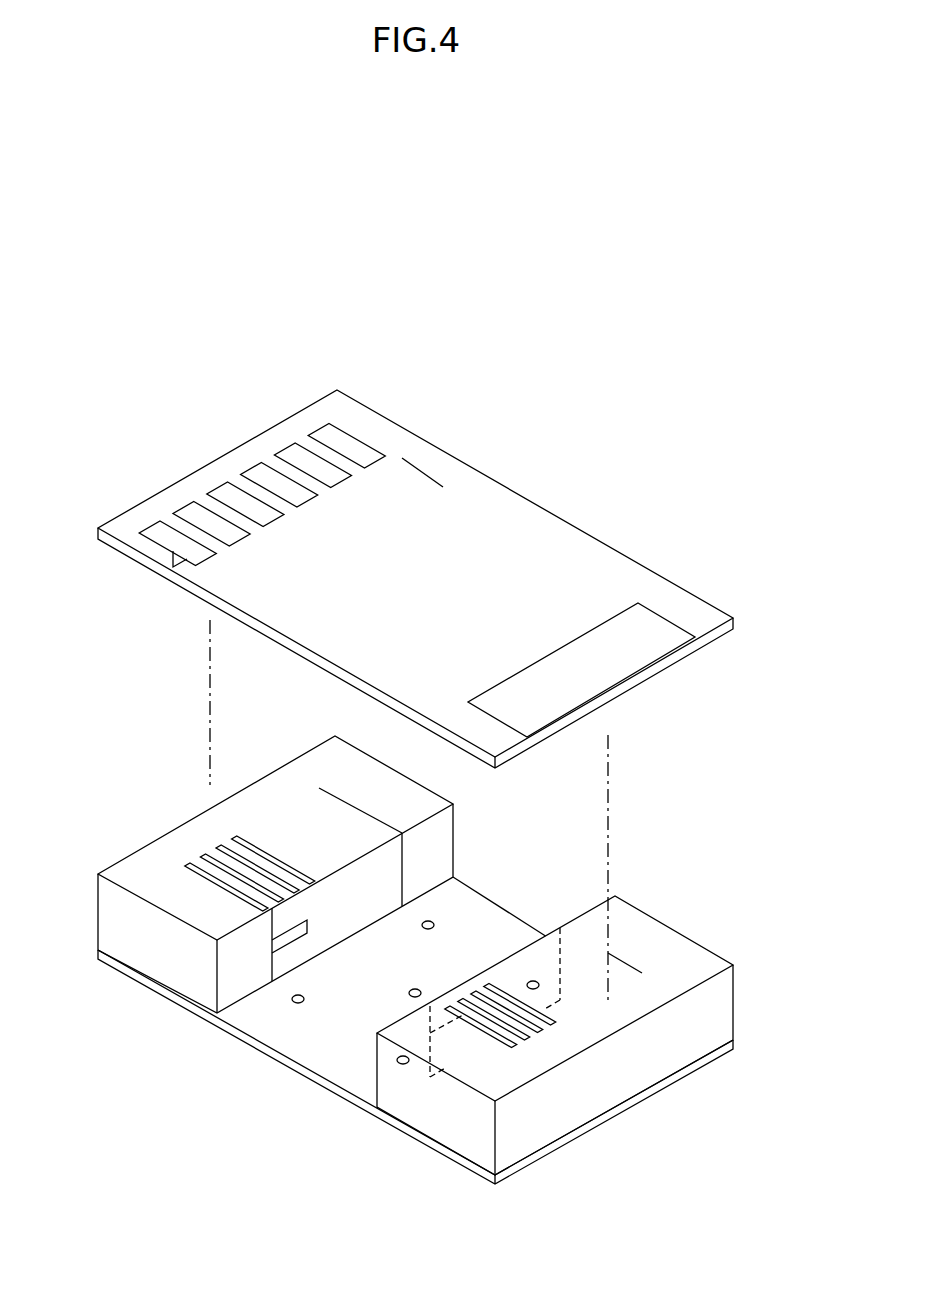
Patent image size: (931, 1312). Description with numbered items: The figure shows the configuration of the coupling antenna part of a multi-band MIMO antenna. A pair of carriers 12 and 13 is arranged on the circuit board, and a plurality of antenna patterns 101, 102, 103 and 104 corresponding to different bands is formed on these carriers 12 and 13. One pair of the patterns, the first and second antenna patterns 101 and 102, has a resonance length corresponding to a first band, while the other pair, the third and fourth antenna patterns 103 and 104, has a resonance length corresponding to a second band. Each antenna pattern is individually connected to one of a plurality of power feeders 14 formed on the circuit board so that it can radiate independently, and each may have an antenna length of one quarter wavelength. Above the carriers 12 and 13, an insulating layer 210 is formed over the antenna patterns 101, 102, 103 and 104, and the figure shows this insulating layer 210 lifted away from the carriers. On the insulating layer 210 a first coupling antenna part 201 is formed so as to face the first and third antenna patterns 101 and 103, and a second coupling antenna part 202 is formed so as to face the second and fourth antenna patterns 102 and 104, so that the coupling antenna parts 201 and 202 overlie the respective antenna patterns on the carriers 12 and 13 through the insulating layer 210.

The carrier 12 is at (456, 812).
The carrier 13 is at (733, 1000).
The power feeder 14 is at (434, 925).
The first antenna pattern 101 is at (343, 798).
The second antenna pattern 102 is at (630, 967).
The third antenna pattern 103 is at (192, 863).
The fourth antenna pattern 104 is at (460, 1015).
The first coupling antenna part 201 is at (402, 458).
The second coupling antenna part 202 is at (670, 618).
The insulating layer 210 is at (120, 525).